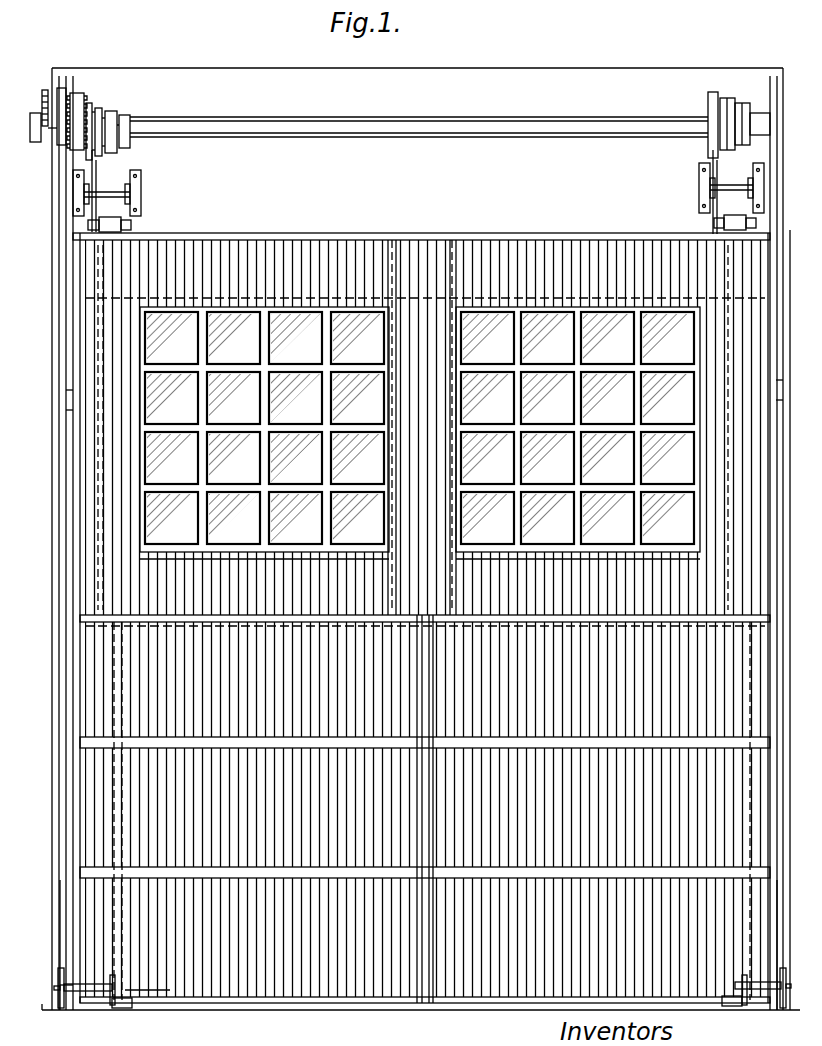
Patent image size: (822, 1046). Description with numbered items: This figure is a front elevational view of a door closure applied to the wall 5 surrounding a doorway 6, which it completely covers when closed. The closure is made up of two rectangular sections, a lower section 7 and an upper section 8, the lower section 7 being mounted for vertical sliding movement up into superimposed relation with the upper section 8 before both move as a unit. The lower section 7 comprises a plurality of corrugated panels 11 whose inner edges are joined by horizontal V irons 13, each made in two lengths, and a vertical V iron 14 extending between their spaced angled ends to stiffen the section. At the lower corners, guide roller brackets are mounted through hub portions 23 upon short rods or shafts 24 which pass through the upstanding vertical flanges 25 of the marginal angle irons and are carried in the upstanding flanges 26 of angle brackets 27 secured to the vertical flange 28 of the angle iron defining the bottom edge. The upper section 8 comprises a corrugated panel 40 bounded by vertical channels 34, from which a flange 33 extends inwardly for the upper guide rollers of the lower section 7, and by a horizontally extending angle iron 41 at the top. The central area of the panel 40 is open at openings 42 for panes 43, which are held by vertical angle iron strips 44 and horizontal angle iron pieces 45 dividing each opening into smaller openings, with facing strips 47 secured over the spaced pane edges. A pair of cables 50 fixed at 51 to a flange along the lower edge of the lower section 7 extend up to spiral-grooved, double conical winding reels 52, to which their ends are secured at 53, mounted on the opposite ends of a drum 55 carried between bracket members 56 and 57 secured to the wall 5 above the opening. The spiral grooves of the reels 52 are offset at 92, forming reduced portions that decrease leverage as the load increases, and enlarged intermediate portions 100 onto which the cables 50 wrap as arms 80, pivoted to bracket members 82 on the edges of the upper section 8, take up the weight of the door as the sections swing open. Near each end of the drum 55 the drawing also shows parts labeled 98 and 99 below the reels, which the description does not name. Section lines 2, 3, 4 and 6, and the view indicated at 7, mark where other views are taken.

The section line 2- 2 is at (786, 1045).
The section line 3- 3 is at (32, 330).
The section line 4- 4 is at (36, 815).
The wall 5 is at (528, 78).
The doorway 6 is at (250, 664).
The lower section 7 is at (238, 356).
The upper section 8 is at (422, 240).
The panels 11 is at (150, 760).
The horizontal V irons 13 is at (334, 730).
The vertical V iron 14 is at (428, 686).
The hub portions 23 is at (66, 990).
The short rods or shafts 24 is at (96, 996).
The upstanding vertical flanges 25 is at (78, 906).
The upstanding flanges 26 is at (116, 988).
The angle brackets 27 is at (130, 996).
The vertical flange 28 is at (238, 984).
The flange 33 is at (80, 408).
The vertical channels 34 is at (80, 468).
The corrugated panel 40 is at (122, 276).
The horizontally extending angle iron 41 is at (356, 236).
The openings 42 is at (348, 296).
The panes 43 is at (530, 316).
The angle iron strips 44 is at (272, 242).
The angle iron pieces 45 is at (425, 620).
The facing strips 47 is at (308, 506).
The cables 50 is at (732, 190).
The cable attachment 51 is at (126, 1004).
The winding reels 52 is at (110, 112).
The cable securing point 53 is at (80, 125).
The drum 55 is at (440, 110).
The bracket member 56 is at (60, 88).
The bracket member 57 is at (764, 102).
The arm or link 80 is at (60, 255).
The bracket members 82 is at (66, 400).
The offset portions 92 is at (108, 112).
The pulley bracket 98 is at (118, 212).
The pulley block 99 is at (88, 225).
The enlarged intermediate portions 100 is at (112, 112).